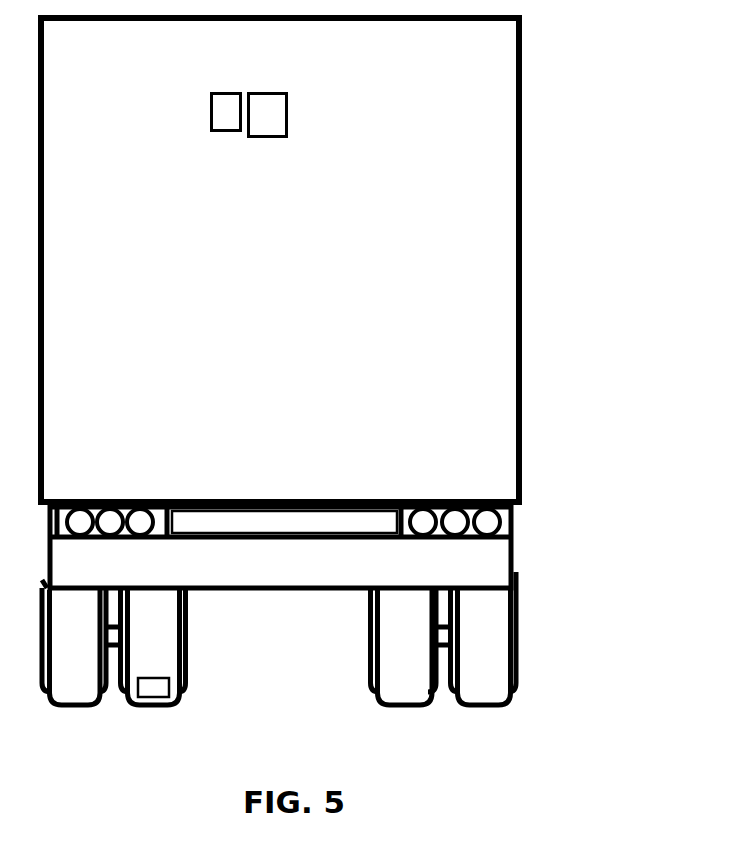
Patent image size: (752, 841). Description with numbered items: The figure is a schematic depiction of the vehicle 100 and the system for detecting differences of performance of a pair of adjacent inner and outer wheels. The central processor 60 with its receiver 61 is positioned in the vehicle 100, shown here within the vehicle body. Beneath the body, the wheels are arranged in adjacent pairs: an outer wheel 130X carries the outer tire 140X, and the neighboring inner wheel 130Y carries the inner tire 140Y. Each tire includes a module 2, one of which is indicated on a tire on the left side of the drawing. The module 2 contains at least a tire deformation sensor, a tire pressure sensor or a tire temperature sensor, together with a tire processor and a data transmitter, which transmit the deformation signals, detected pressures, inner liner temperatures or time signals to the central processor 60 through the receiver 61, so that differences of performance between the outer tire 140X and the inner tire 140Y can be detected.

The vehicle 100 is at (349, 410).
The central processor 60 is at (273, 108).
The receiver 61 is at (221, 105).
The inner wheel 130Y is at (366, 631).
The inner tire 140Y is at (404, 664).
The outer wheel 130X is at (521, 640).
The outer tire 140X is at (485, 650).
The module 2 is at (154, 692).